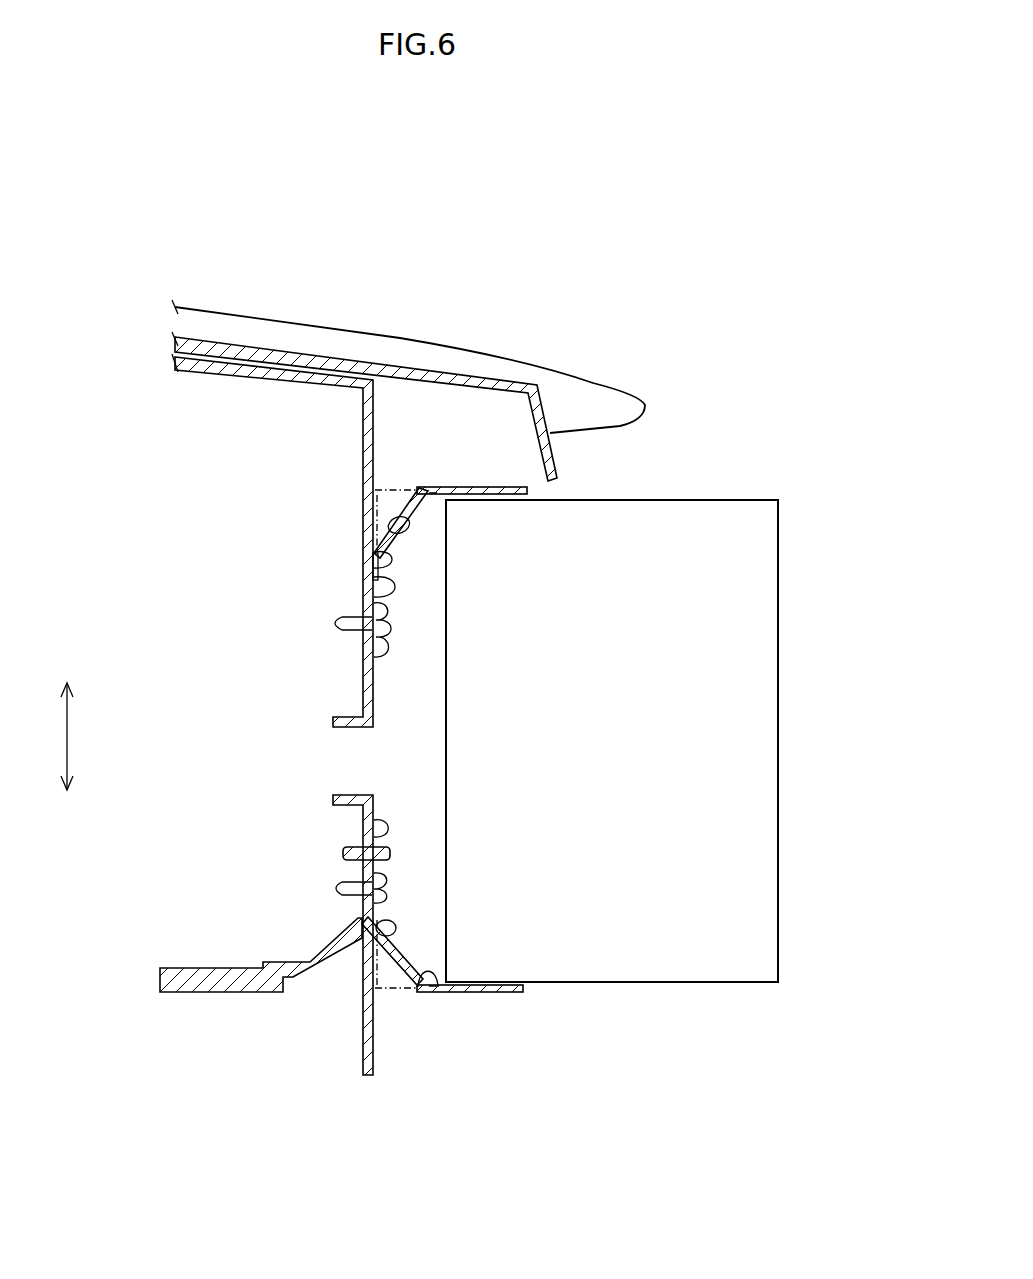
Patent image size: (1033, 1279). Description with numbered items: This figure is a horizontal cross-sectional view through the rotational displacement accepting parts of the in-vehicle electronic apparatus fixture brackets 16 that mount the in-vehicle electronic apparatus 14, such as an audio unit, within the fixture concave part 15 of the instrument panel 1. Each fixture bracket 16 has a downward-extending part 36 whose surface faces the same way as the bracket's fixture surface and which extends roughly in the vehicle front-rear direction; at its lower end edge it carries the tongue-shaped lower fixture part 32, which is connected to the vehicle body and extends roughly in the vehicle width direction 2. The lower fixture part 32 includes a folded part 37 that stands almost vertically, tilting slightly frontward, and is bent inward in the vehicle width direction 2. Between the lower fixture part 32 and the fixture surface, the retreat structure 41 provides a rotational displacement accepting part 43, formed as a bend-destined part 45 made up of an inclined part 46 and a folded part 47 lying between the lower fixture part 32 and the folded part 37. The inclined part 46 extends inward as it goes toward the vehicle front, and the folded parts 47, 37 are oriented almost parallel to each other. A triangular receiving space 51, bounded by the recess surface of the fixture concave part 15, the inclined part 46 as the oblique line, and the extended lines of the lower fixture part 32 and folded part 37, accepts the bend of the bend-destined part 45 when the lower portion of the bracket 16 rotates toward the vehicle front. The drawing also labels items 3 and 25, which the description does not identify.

The instrument panel 1 is at (408, 337).
The roof 3 is at (570, 357).
The vehicle width direction 2 is at (70, 737).
The in-vehicle electronic apparatus 14 is at (778, 643).
The fixture concave part 15 is at (637, 447).
The in-vehicle electronic apparatus fixture bracket 16 is at (452, 470).
The garnish 25 is at (190, 968).
The lower fixture part 32 is at (365, 658).
The downward-extending part 36 is at (507, 487).
The folded part 37 is at (432, 500).
The retreat structure 41 is at (267, 782).
The rotational displacement accepting part 43 is at (360, 781).
The bend-destined part 45 is at (360, 781).
The inclined part 46 is at (385, 542).
The folded part 47 is at (374, 556).
The receiving space 51 is at (385, 507).